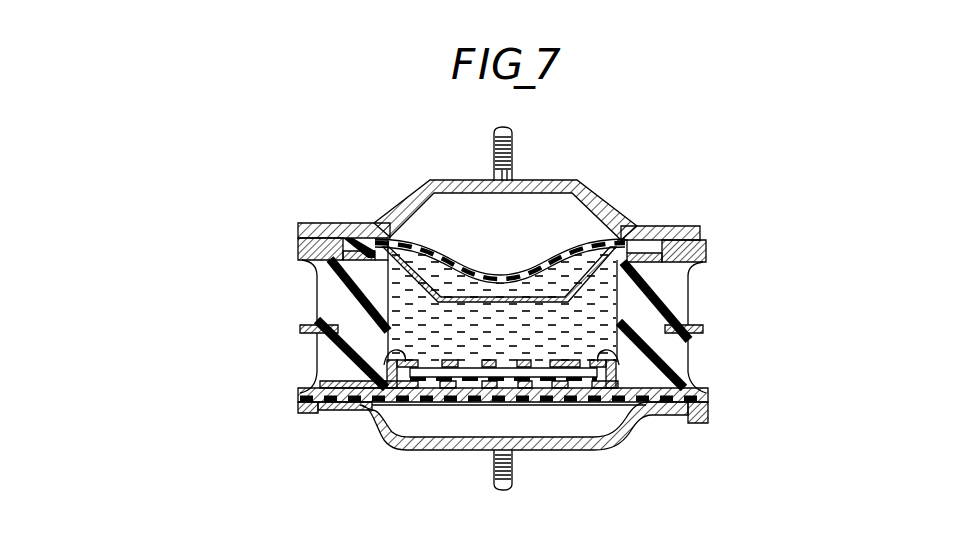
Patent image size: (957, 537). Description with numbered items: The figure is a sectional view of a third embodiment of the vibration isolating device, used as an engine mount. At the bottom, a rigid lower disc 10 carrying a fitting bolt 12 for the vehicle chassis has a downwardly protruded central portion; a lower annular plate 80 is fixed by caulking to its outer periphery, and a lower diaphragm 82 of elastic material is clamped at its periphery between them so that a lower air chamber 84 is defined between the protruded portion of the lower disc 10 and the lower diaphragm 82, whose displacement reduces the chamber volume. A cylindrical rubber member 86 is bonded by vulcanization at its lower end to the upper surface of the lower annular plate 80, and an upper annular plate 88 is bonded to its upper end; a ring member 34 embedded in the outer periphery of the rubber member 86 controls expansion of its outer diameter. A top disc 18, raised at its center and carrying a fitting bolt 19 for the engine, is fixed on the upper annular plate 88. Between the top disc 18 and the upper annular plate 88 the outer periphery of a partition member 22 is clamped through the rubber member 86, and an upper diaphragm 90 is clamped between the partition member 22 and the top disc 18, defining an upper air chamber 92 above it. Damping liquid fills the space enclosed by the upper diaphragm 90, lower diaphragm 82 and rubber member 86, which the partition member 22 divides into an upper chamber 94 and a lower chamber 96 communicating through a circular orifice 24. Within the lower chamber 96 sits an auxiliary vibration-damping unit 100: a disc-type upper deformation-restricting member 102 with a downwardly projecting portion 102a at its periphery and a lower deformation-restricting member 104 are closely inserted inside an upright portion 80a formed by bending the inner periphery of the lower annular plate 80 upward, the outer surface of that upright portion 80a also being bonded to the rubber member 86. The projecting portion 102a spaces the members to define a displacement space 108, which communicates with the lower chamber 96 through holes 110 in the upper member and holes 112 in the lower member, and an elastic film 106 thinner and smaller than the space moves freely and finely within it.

The lower disc 10 is at (610, 452).
The fitting bolt 12 is at (513, 478).
The top disc 18 is at (660, 224).
The fitting bolt 19 is at (513, 160).
The partition member 22 is at (330, 296).
The restricted passage or orifice 24 is at (500, 268).
The ring member 34 is at (700, 328).
The lower annular plate 80 is at (708, 410).
The upright portion 80a is at (670, 367).
The lower diaphragm 82 is at (630, 438).
The lower air chamber 84 is at (422, 420).
The cylindrical rubber member 86 is at (690, 288).
The upper annular plate 88 is at (708, 243).
The upper diaphragm 90 is at (577, 257).
The upper air chamber 92 is at (442, 210).
The upper chamber 94 is at (410, 250).
The lower chamber 96 is at (330, 347).
The auxiliary vibration-damping unit 100 is at (655, 350).
The upper deformation-restricting member 102 is at (357, 355).
The downwardly projecting portion 102a is at (362, 412).
The lower deformation-restricting member 104 is at (360, 407).
The elastic film 106 is at (572, 381).
The displacement space 108 is at (435, 372).
The holes 110 is at (465, 368).
The holes 112 is at (503, 381).